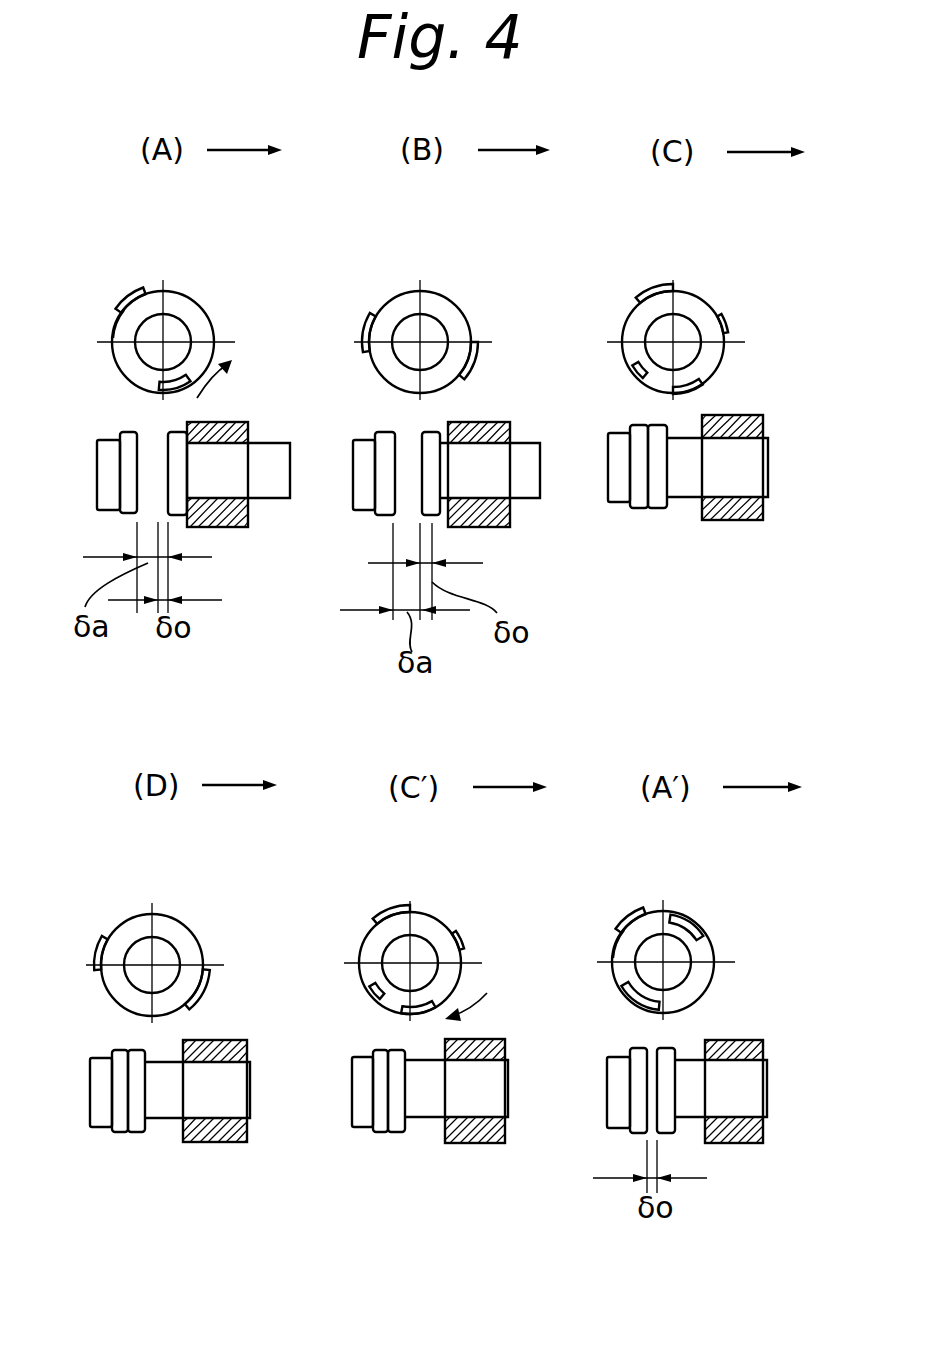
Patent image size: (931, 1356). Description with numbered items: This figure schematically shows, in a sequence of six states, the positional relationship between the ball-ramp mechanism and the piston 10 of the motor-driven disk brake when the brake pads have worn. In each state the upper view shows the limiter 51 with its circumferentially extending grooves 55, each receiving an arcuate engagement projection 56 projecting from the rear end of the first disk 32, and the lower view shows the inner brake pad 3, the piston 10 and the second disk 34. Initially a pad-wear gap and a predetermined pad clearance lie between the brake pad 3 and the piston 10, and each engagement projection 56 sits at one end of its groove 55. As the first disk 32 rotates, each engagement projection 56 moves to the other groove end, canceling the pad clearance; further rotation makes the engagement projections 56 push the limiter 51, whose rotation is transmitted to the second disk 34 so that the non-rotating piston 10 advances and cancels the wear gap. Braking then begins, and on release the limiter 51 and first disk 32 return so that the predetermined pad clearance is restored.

The inner brake pad 3 is at (112, 493).
The piston 10 is at (273, 480).
The second disk 34 is at (200, 425).
The limiter 51 is at (203, 317).
The groove 55 is at (120, 327).
The engagement projection 56 is at (147, 297).
The first disk 32 is at (415, 596).